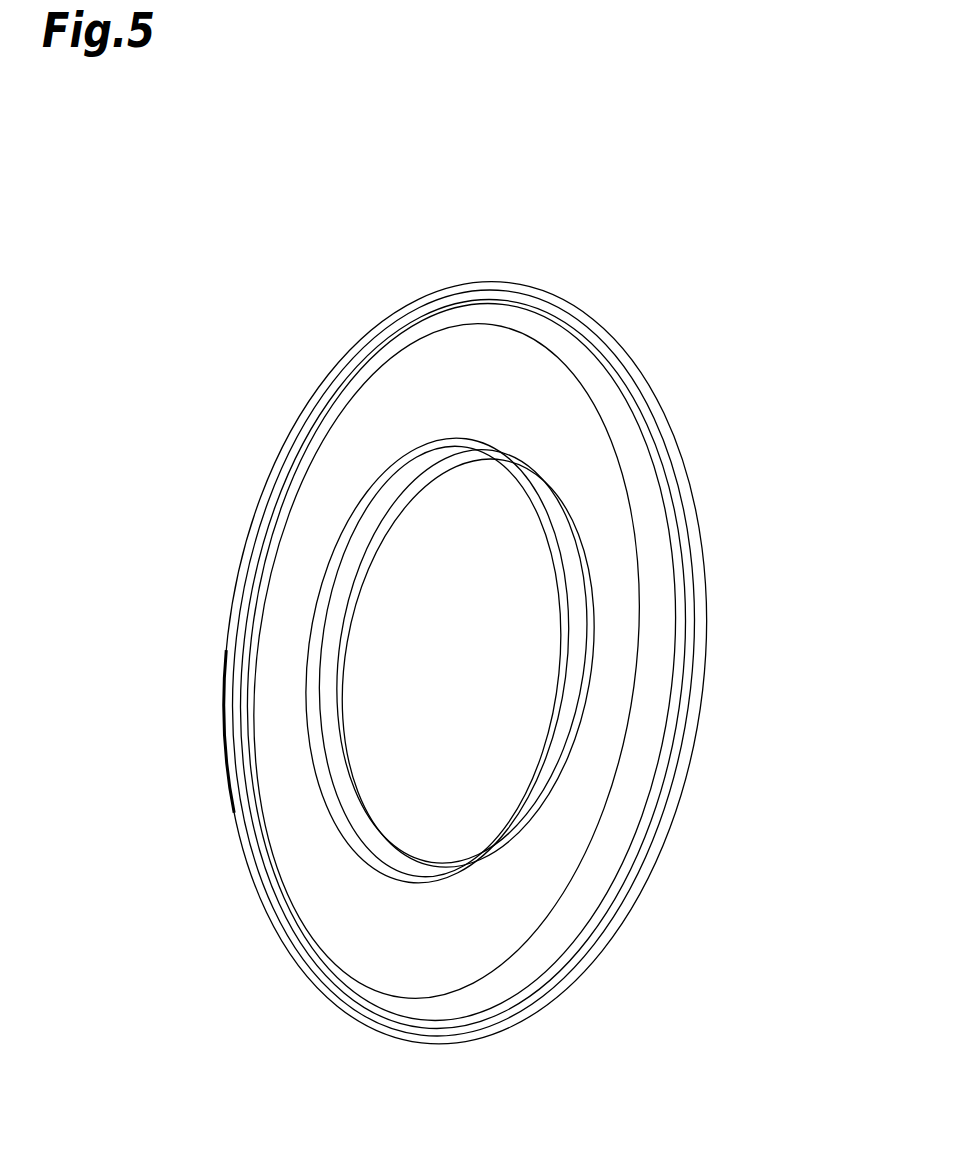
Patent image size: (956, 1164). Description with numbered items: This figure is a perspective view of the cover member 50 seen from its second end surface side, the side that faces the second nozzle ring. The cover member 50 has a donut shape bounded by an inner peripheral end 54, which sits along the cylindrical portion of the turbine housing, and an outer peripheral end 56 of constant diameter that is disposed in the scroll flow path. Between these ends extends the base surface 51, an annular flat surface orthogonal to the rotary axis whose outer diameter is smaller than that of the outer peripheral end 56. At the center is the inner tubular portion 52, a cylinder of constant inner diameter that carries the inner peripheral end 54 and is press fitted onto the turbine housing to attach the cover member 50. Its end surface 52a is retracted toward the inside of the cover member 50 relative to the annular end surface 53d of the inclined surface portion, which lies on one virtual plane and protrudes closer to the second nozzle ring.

The cover member 50 is at (562, 263).
The base surface 51 is at (362, 937).
The inner tubular portion 52 is at (575, 592).
The inner peripheral end 54 is at (468, 663).
The end surface of the inner tubular portion 52a is at (595, 655).
The end surface of the inclined surface portion 53d is at (635, 903).
The outer peripheral end 56 is at (479, 283).